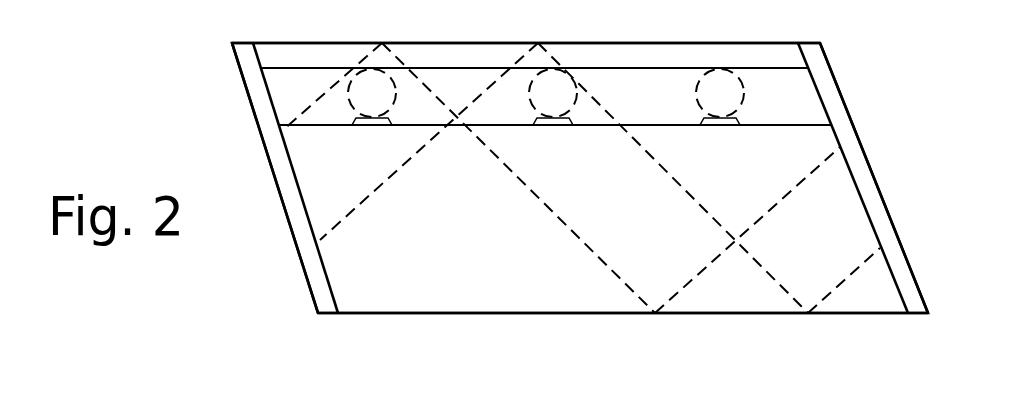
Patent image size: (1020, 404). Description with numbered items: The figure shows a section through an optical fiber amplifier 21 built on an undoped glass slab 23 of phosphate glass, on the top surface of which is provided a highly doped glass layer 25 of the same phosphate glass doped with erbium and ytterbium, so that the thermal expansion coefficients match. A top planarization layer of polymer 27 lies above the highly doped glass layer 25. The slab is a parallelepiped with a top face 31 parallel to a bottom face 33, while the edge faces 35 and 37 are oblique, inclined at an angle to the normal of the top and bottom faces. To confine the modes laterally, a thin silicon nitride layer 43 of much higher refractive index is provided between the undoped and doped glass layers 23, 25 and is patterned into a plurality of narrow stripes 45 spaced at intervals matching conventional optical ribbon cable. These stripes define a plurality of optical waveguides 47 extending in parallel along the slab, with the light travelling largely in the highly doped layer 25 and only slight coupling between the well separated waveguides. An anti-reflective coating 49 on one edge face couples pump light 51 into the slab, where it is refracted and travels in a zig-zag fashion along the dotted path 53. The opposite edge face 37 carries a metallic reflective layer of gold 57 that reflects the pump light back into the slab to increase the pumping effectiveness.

The optical fiber amplifier 21 is at (822, 330).
The undoped glass slab 23 is at (442, 285).
The highly doped glass layer 25 is at (797, 96).
The top planarization layer of polymer 27 is at (673, 62).
The top face 31 is at (428, 43).
The bottom face 33 is at (565, 313).
The edge face 35 is at (313, 293).
The edge face 37 is at (897, 232).
The silicon nitride layer 43 is at (372, 123).
The stripes 45 is at (722, 125).
The optical waveguides 47 is at (363, 87).
The anti-reflective coating 49 is at (300, 255).
The pump light 51 is at (230, 123).
The dotted path 53 is at (678, 292).
The metallic reflective layer of gold 57 is at (873, 176).